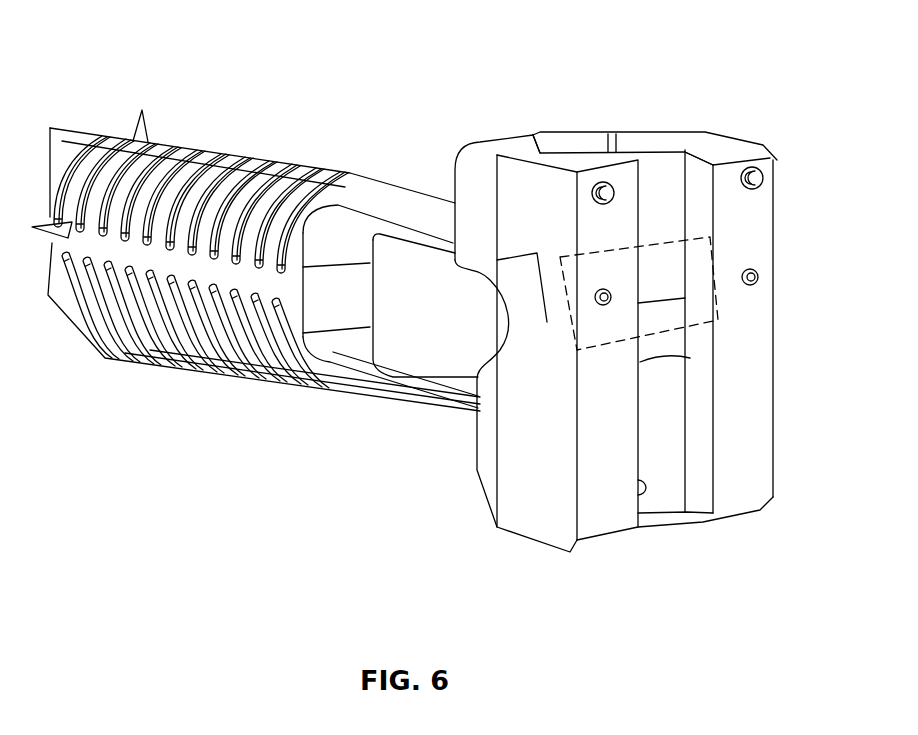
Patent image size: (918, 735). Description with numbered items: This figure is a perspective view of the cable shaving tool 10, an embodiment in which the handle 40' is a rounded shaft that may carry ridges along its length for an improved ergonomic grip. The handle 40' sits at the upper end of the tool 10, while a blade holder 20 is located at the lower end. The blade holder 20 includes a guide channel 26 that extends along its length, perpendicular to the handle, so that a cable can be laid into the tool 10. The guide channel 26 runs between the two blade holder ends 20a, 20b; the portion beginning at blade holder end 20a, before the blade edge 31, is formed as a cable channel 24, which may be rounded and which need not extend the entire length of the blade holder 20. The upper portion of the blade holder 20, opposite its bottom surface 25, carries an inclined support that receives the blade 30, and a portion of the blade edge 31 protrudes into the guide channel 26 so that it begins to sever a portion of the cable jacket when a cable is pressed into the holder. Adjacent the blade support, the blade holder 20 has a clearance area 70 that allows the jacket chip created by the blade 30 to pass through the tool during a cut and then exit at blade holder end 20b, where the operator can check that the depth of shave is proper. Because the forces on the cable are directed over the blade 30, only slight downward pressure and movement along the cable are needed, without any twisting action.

The cable shaving tool 10 is at (396, 102).
The handle 40' is at (256, 242).
The blade holder 20 is at (533, 460).
The blade holder end 20a is at (733, 508).
The blade holder end 20b is at (722, 132).
The cable channel 24 is at (652, 463).
The bottom surface 25 is at (595, 493).
The guide channel 26 is at (660, 182).
The blade 30 is at (670, 263).
The blade edge 31 is at (663, 352).
The clearance area 70 is at (597, 132).